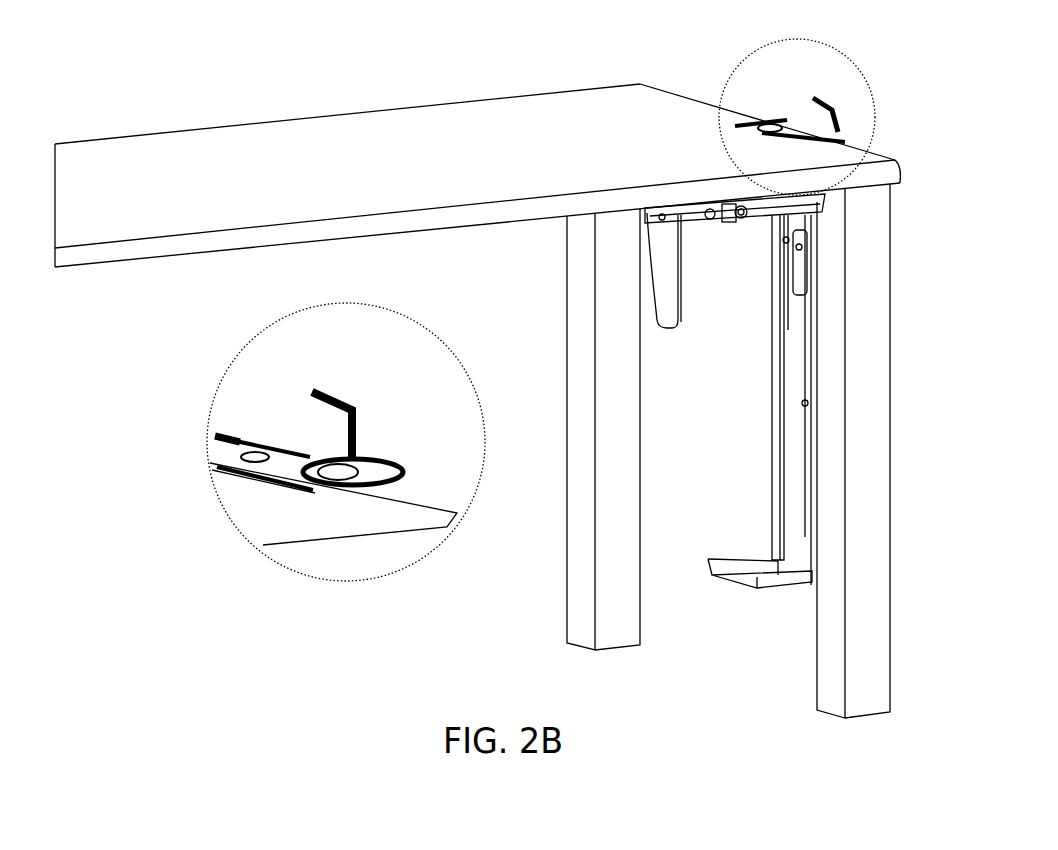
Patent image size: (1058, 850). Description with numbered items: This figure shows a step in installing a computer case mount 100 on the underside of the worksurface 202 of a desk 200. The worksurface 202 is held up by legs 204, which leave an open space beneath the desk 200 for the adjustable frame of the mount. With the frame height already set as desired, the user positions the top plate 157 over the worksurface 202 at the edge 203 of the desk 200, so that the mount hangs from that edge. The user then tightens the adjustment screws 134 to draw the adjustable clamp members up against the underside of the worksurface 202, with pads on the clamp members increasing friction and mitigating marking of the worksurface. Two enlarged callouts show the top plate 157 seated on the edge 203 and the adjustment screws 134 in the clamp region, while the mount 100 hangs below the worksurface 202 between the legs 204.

The computer case mount 100 is at (889, 84).
The adjustment screws 134 is at (362, 462).
The top plate 157 is at (257, 447).
The desk 200 is at (257, 153).
The worksurface 202 is at (595, 158).
The edge 203 is at (643, 92).
The legs 204 is at (583, 355).